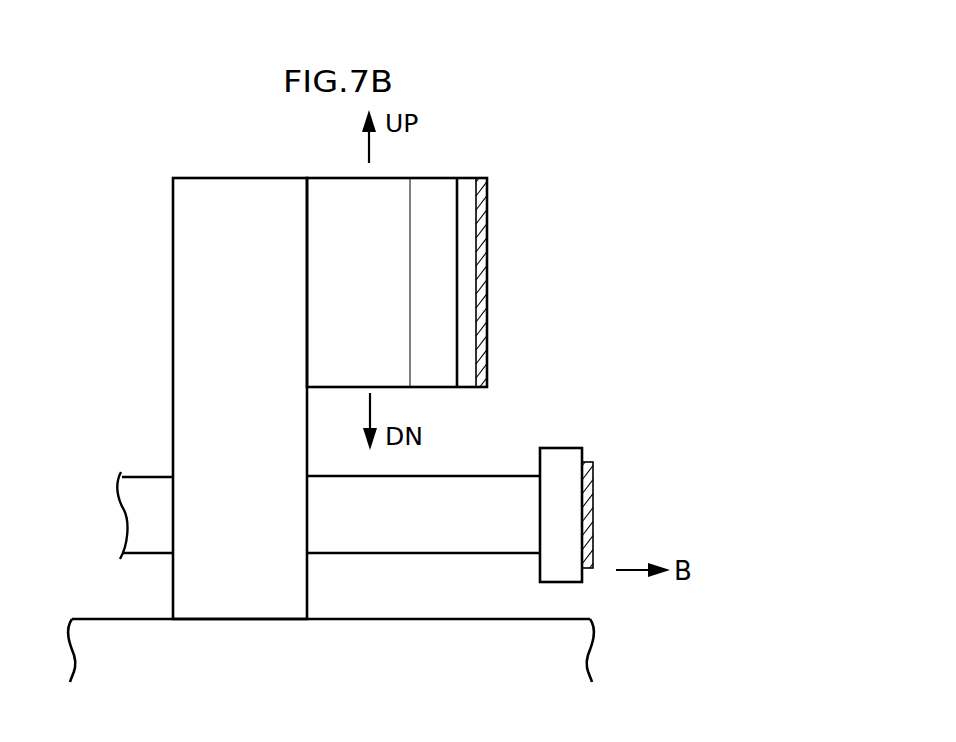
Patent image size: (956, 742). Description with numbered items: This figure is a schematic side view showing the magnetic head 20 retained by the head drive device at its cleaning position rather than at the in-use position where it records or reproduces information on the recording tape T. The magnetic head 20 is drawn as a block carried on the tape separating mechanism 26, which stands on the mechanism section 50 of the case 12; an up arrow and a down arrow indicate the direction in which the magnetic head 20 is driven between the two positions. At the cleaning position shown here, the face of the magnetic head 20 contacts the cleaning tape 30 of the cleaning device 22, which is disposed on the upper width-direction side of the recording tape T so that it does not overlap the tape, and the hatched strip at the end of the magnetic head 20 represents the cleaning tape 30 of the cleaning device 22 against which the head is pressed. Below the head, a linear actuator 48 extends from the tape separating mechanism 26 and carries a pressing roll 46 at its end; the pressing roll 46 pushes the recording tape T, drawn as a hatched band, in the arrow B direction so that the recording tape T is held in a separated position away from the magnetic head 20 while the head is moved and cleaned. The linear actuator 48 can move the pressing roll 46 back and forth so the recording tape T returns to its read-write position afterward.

The tape separating mechanism 26 is at (267, 197).
The magnetic head 20 is at (448, 177).
The cleaning tape 30 is at (548, 282).
The cleaning device 22 is at (486, 287).
The linear actuator 48 is at (487, 486).
The pressing roll 46 is at (558, 456).
The recording tape T is at (593, 508).
The mechanism section 50 is at (331, 625).
The case 12 is at (397, 618).